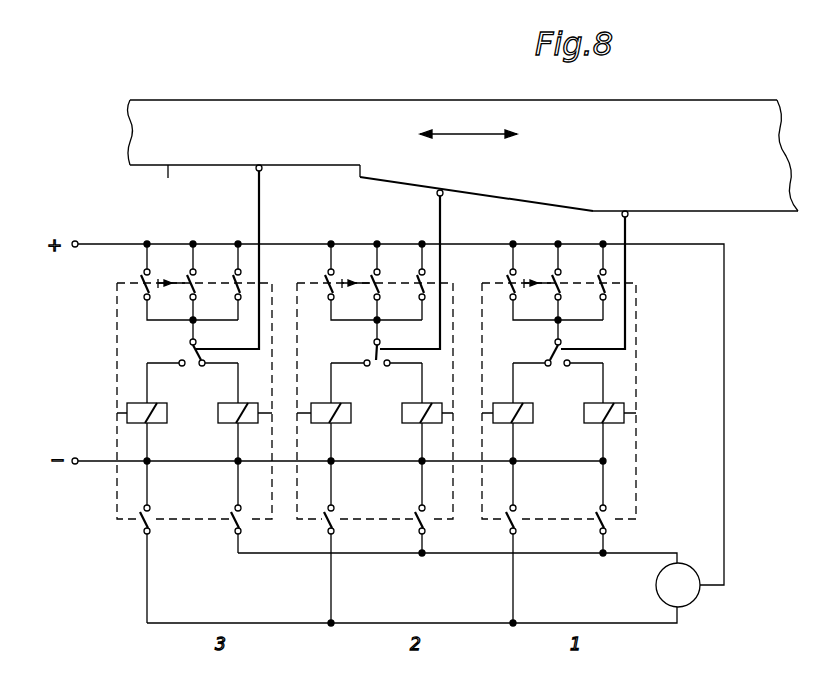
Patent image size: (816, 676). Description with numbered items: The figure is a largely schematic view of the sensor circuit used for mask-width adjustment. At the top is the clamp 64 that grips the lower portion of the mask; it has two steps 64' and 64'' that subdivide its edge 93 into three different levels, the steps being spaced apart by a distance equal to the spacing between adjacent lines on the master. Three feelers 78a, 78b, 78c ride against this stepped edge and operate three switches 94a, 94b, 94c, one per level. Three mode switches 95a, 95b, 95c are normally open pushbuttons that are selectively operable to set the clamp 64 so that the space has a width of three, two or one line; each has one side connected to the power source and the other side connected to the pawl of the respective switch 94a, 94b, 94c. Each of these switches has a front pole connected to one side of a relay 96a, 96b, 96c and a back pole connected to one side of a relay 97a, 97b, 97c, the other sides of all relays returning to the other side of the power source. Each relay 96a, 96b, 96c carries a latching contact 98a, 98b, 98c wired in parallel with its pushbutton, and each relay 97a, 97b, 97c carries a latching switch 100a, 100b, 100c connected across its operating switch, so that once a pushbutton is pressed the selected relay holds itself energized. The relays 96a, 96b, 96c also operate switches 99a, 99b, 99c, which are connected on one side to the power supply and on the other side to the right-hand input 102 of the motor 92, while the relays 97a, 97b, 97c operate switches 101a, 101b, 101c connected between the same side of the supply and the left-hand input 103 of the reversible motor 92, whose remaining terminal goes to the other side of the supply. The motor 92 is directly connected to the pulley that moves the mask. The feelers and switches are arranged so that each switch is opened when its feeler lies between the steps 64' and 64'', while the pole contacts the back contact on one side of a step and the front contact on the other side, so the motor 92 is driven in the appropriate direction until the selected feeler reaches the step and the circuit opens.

The clamp 64 is at (463, 127).
The step 64' is at (375, 151).
The step 64'' is at (476, 186).
The edge 93 is at (167, 185).
The feeler 78a is at (262, 191).
The feeler 78b is at (440, 217).
The feeler 78c is at (628, 229).
The mode switch 95a is at (196, 291).
The mode switch 95b is at (380, 291).
The mode switch 95c is at (561, 291).
The latching contact 98a is at (189, 283).
The latching contact 98b is at (373, 283).
The latching contact 98c is at (555, 283).
The latching switch 100a is at (232, 280).
The latching switch 100b is at (416, 280).
The latching switch 100c is at (597, 280).
The switch 94a is at (181, 360).
The switch 94b is at (372, 357).
The switch 94c is at (550, 350).
The relay 96a is at (160, 418).
The relay 96b is at (344, 418).
The relay 96c is at (526, 418).
The relay 97a is at (218, 403).
The relay 97b is at (408, 403).
The relay 97c is at (590, 403).
The switch 99a is at (138, 527).
The switch 99b is at (324, 528).
The switch 99c is at (505, 528).
The switch 101a is at (228, 528).
The switch 101b is at (412, 528).
The switch 101c is at (594, 528).
The left-hand input 103 is at (680, 562).
The motor 92 is at (697, 594).
The right-hand input 102 is at (679, 606).